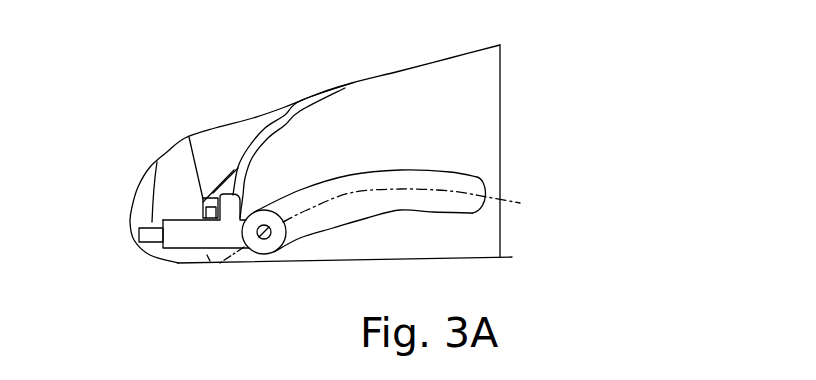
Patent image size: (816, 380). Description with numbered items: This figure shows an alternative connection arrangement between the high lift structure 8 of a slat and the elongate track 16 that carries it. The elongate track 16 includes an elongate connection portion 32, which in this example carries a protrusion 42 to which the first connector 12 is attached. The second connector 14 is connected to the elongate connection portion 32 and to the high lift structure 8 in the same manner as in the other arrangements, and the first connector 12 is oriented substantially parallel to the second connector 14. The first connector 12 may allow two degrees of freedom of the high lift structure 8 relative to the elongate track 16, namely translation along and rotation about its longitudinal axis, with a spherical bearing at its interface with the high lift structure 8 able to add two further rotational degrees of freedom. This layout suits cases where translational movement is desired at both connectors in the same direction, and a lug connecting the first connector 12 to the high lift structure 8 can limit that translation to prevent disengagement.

The high lift structure 8 is at (140, 184).
The first connector 12 is at (209, 198).
The second connector 14 is at (139, 231).
The elongate track 16 is at (413, 180).
The elongate connection portion 32 is at (192, 240).
The protrusion 42 is at (237, 167).